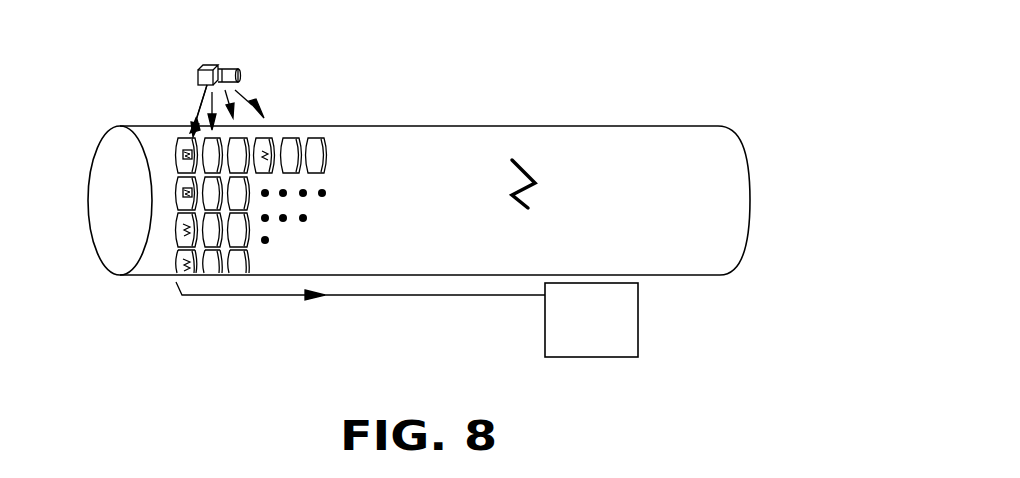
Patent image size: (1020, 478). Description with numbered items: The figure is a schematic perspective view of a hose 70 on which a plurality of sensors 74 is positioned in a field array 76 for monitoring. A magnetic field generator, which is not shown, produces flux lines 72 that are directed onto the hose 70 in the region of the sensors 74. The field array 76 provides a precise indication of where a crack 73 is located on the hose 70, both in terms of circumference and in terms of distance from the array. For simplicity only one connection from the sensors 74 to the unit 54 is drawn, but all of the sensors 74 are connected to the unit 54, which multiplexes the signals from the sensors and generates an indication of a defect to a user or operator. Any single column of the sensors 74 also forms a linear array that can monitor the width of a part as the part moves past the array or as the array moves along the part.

The hose 70 is at (737, 190).
The flux lines 72 is at (236, 67).
The crack 73 is at (528, 167).
The sensors 74 is at (197, 77).
The field array 76 is at (497, 345).
The unit 54 is at (591, 320).